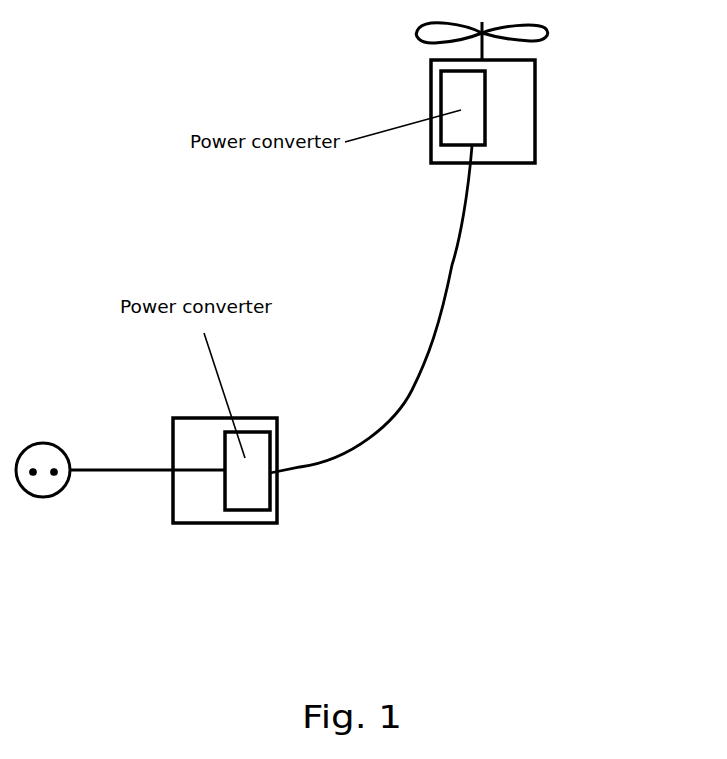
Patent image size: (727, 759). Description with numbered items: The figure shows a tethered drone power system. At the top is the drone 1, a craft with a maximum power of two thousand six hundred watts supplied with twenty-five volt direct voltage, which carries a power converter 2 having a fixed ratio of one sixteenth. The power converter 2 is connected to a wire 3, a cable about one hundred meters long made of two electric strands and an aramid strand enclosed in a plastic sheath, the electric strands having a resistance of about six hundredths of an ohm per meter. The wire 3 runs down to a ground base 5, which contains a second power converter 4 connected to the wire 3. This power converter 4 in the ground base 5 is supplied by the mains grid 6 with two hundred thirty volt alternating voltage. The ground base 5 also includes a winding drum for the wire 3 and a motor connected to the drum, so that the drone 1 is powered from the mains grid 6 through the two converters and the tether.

The drone 1 is at (535, 72).
The power converter 2 is at (485, 123).
The wire 3 is at (452, 265).
The power converter 4 is at (270, 497).
The ground base 5 is at (248, 523).
The mains grid 6 is at (52, 500).